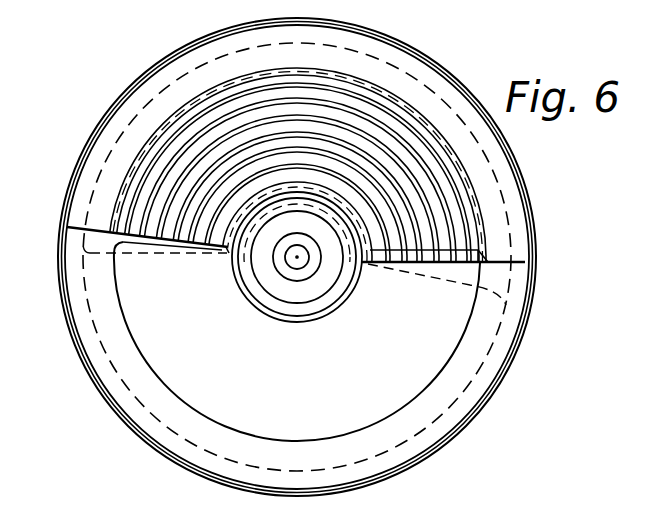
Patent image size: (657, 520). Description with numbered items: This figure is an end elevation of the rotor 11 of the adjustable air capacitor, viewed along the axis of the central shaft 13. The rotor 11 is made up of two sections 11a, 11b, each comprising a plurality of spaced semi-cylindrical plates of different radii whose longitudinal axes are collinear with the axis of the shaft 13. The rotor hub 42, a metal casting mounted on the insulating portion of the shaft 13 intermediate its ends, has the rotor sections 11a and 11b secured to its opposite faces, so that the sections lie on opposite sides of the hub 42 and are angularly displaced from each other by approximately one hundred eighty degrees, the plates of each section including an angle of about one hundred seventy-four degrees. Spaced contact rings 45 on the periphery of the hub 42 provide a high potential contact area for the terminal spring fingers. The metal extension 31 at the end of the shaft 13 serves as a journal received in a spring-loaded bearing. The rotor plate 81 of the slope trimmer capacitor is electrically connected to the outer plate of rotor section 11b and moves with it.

The rotor 11 is at (72, 160).
The rotor section 11a is at (476, 346).
The rotor section 11b is at (417, 112).
The central shaft 13 is at (312, 270).
The metal extension 31 is at (291, 262).
The rotor hub 42 is at (292, 427).
The contact ring 45 is at (73, 329).
The rotor plate 81 is at (397, 58).